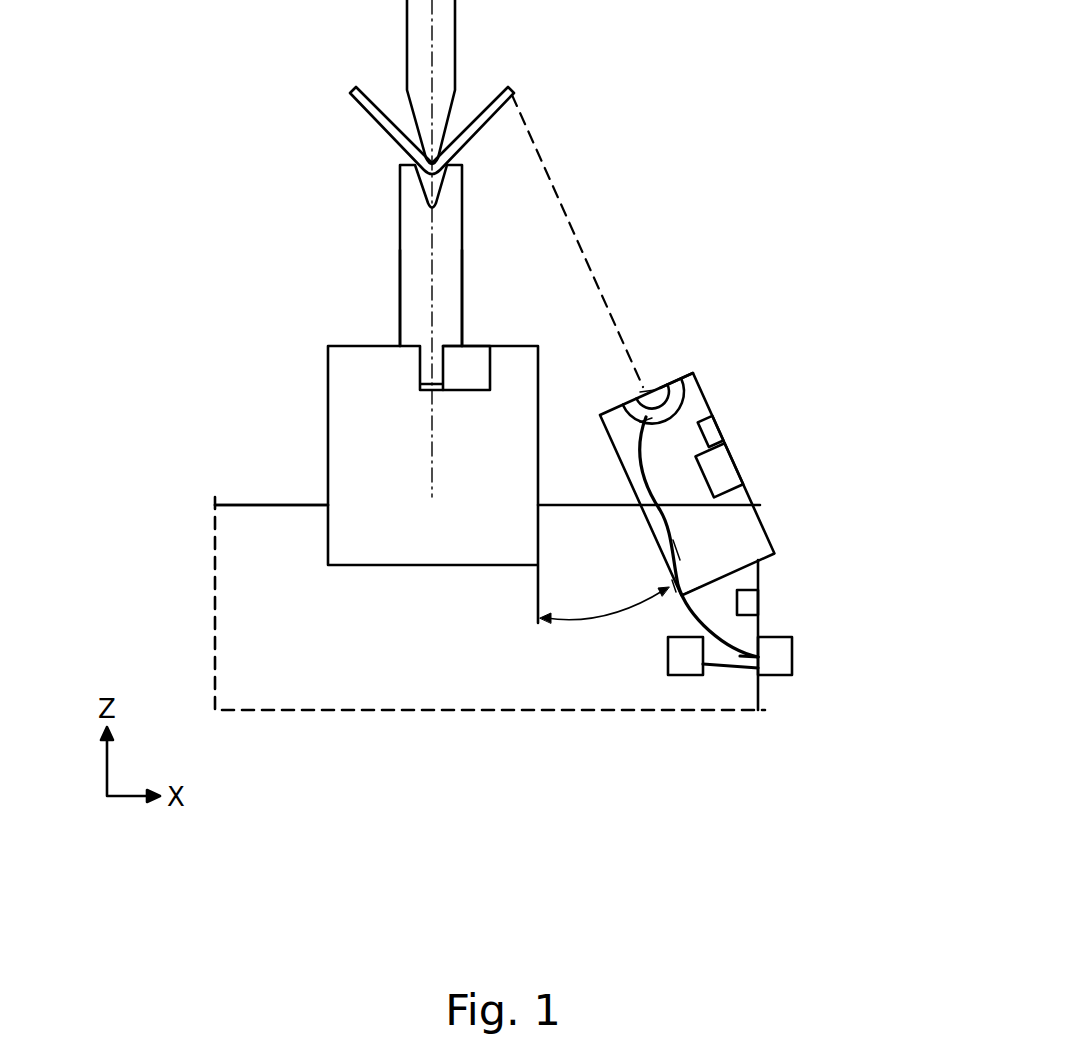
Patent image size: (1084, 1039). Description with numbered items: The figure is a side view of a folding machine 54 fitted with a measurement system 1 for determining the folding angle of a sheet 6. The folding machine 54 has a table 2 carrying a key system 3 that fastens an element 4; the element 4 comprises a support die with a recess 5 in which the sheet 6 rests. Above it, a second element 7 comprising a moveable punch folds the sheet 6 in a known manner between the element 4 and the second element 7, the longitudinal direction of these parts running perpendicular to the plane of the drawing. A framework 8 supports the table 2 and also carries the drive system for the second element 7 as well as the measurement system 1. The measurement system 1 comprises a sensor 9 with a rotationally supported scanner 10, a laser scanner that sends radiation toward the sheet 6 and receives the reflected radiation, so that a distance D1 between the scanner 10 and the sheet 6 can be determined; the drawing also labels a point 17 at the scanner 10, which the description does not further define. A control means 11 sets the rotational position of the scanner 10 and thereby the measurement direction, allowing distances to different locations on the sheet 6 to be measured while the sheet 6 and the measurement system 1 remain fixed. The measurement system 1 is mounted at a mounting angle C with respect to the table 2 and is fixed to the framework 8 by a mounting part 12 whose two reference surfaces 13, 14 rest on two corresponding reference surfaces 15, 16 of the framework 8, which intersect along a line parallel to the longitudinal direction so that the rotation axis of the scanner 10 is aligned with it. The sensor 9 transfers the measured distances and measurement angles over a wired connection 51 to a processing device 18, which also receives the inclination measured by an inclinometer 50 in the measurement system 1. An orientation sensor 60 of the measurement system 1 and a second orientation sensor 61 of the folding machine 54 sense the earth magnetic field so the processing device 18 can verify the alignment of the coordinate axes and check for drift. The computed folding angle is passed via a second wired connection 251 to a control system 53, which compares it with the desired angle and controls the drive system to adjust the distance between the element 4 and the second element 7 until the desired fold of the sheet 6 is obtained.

The measurement system 1 is at (680, 437).
The table 2 is at (350, 392).
The key system 3 is at (465, 377).
The element 4 is at (413, 285).
The recess 5 is at (425, 190).
The sheet 6 is at (363, 107).
The second element 7 is at (418, 15).
The framework 8 is at (230, 617).
The sensor 9 is at (670, 375).
The scanner 10 is at (652, 392).
The control means 11 is at (647, 420).
The mounting part 12 is at (681, 547).
The reference surface 13 is at (657, 503).
The reference surface 14 is at (683, 593).
The corresponding reference surface 15 is at (655, 540).
The corresponding reference surface 16 is at (705, 585).
The measuring point 17 is at (650, 392).
The processing device 18 is at (793, 653).
The inclinometer 50 is at (722, 465).
The wired connection 51 is at (734, 668).
The control system 53 is at (680, 665).
The folding machine 54 is at (280, 192).
The orientation sensor 60 is at (708, 428).
The second orientation sensor 61 is at (748, 603).
The second wired connection 251 is at (718, 670).
The distance D1 is at (580, 233).
The mounting angle C is at (604, 618).